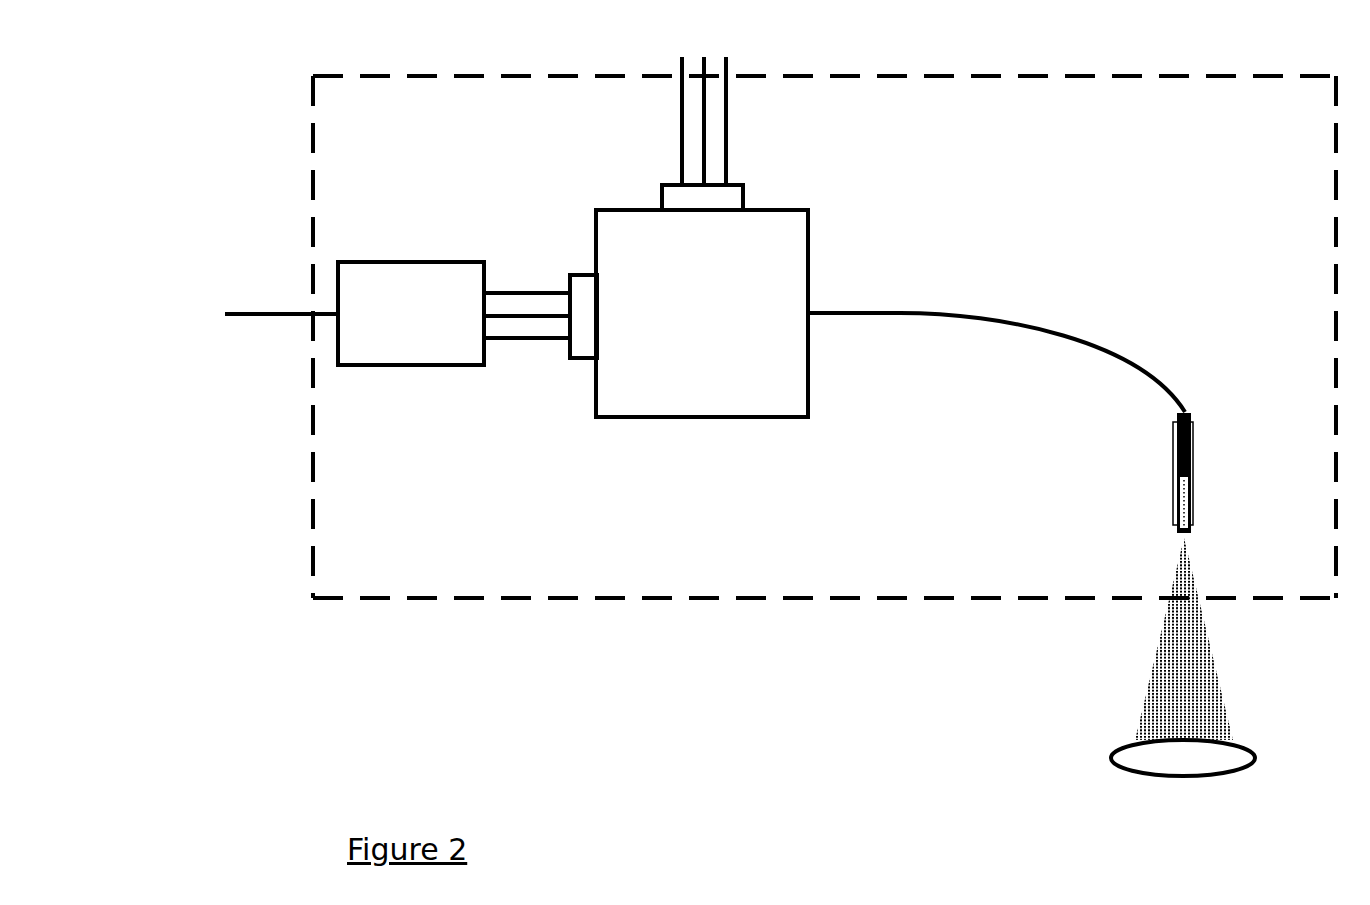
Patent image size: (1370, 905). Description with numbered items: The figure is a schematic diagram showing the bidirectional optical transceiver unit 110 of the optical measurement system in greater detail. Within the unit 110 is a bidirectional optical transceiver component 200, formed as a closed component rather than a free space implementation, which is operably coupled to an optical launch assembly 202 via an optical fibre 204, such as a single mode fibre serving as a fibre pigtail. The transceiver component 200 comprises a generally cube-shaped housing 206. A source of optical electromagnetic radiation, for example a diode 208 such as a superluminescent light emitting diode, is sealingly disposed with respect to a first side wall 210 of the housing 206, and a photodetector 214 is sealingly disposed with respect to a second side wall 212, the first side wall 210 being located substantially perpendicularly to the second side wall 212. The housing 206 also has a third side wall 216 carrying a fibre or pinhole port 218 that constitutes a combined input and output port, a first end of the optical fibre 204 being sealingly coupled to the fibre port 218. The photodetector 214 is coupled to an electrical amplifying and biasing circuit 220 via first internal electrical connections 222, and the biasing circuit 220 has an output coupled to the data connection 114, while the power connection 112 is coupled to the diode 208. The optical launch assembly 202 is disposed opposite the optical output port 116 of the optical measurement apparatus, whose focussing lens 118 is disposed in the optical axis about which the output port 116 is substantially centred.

The bidirectional optical transceiver unit 110 is at (803, 598).
The power connection 112 is at (726, 77).
The data connection 114 is at (313, 314).
The optical output port 116 is at (1166, 599).
The focussing lens 118 is at (1112, 760).
The bidirectional optical transceiver component 200 is at (752, 420).
The optical launch assembly 202 is at (1172, 468).
The optical fibre 204 is at (923, 313).
The housing 206 is at (702, 313).
The diode 208 is at (743, 186).
The first side wall 210 is at (806, 207).
The second side wall 212 is at (594, 404).
The photodetector 214 is at (570, 353).
The third side wall 216 is at (811, 260).
The fibre port 218 is at (808, 318).
The electrical amplifying and biasing circuit 220 is at (411, 313).
The first internal electrical connections 222 is at (520, 286).